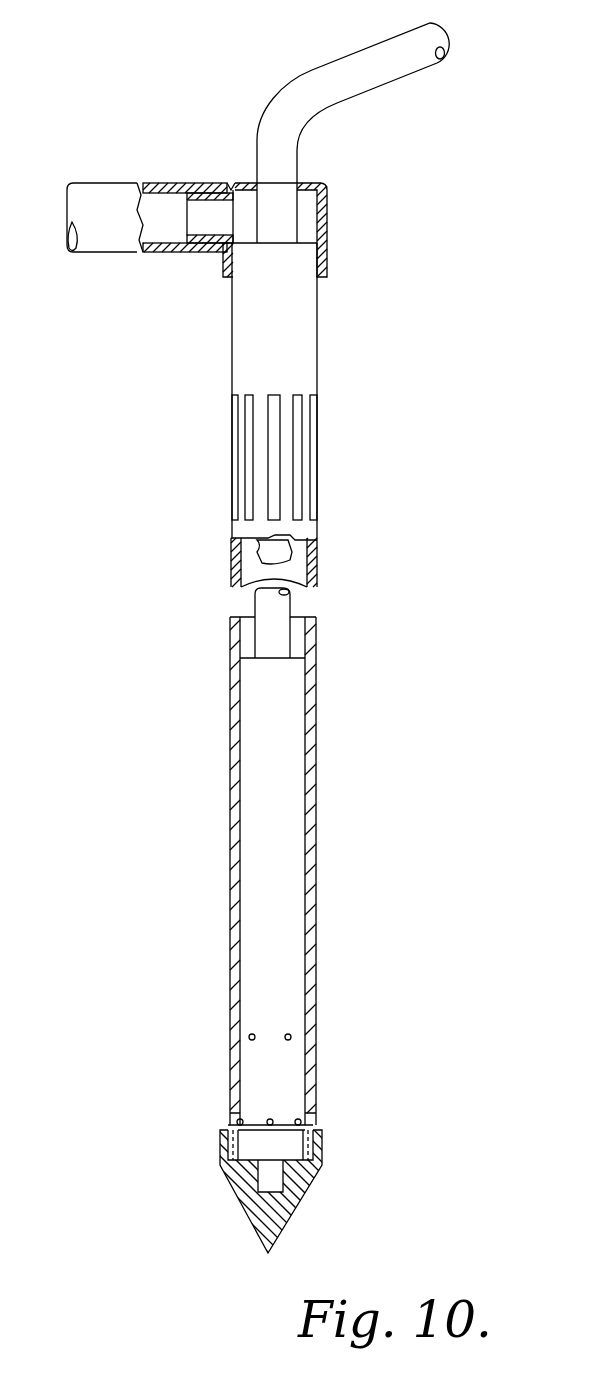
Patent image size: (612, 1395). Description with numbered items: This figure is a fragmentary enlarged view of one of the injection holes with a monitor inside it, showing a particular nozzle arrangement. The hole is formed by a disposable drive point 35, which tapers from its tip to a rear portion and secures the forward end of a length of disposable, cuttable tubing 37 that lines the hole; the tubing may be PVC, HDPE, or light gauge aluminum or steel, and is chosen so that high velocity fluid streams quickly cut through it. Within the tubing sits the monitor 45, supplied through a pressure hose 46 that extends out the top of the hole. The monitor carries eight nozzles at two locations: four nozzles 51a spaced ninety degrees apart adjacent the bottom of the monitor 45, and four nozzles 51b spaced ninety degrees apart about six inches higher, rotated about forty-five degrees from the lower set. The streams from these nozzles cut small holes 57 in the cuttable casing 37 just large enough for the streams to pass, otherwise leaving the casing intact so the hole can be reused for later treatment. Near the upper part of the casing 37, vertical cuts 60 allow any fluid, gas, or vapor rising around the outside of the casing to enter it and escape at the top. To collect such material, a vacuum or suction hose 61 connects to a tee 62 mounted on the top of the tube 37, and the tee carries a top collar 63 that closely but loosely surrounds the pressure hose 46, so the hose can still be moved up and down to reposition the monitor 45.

The disposable drive point 35 is at (293, 1200).
The cuttable tubing 37 is at (302, 338).
The monitor 45 is at (285, 887).
The pressure hose 46 is at (407, 40).
The nozzles 51a is at (300, 1117).
The nozzles 51b is at (288, 1033).
The small holes 57 is at (228, 1123).
The vertical cuts 60 is at (302, 470).
The vacuum or suction hose 61 is at (108, 182).
The tee 62 is at (327, 220).
The top collar 63 is at (243, 182).